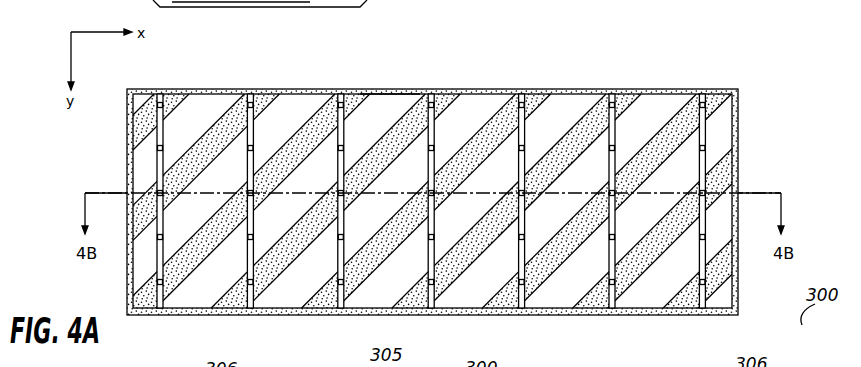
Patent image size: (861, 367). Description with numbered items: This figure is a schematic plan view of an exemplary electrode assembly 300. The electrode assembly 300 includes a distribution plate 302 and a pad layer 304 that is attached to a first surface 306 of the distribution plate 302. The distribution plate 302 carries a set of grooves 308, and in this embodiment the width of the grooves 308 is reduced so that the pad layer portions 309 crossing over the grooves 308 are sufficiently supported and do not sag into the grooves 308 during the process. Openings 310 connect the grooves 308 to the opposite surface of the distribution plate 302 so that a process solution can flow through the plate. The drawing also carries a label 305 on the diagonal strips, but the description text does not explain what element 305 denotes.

The electrode assembly 300 is at (430, 157).
The distribution plate 302 is at (740, 93).
The pad layer 304 is at (732, 168).
The diagonal strips 305 is at (475, 108).
The first surface 306 is at (292, 106).
The grooves 308 is at (158, 92).
The pad layer portions 309 is at (497, 133).
The openings 310 is at (389, 100).